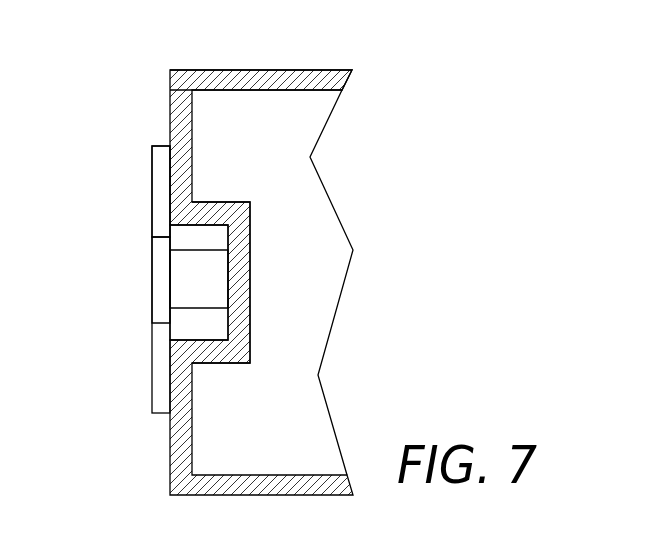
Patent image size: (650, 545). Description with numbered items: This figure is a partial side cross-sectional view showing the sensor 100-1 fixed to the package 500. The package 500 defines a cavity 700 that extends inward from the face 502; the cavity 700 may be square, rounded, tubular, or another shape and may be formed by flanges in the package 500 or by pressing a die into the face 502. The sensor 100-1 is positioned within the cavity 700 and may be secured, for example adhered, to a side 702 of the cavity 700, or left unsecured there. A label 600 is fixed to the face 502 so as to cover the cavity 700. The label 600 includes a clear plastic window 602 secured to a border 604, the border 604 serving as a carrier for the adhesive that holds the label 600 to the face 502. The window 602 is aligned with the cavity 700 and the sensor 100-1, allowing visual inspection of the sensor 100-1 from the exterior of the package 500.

The package 500 is at (243, 91).
The face 502 is at (170, 98).
The label 600 is at (152, 165).
The window 602 is at (152, 271).
The border 604 is at (152, 205).
The cavity 700 is at (199, 318).
The side 702 is at (228, 237).
The sensor 100-1 is at (210, 278).